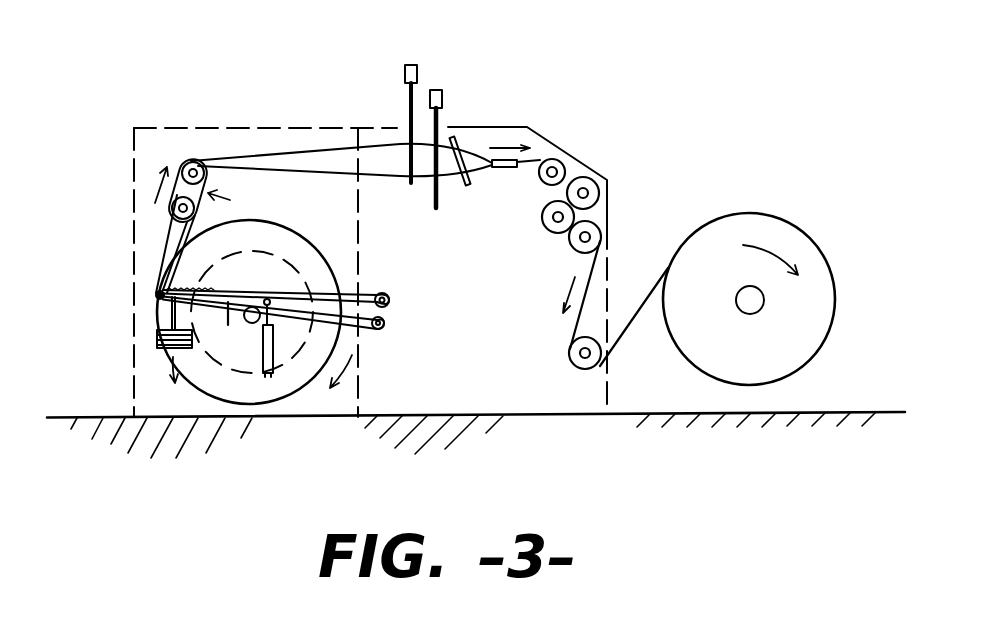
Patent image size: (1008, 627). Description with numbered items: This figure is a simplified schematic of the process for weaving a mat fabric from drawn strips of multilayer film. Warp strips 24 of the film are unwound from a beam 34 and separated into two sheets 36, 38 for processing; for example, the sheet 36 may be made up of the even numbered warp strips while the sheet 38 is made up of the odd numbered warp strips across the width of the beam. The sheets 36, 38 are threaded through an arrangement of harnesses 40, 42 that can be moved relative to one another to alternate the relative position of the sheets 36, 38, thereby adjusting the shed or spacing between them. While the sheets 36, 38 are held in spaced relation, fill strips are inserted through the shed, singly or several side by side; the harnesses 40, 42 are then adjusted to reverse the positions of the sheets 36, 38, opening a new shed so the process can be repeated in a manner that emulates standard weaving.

The warp strips 24 is at (193, 149).
The beam 34 is at (300, 393).
The sheet 36 is at (272, 152).
The sheet 38 is at (317, 170).
The harness 40 is at (412, 62).
The harness 42 is at (433, 88).